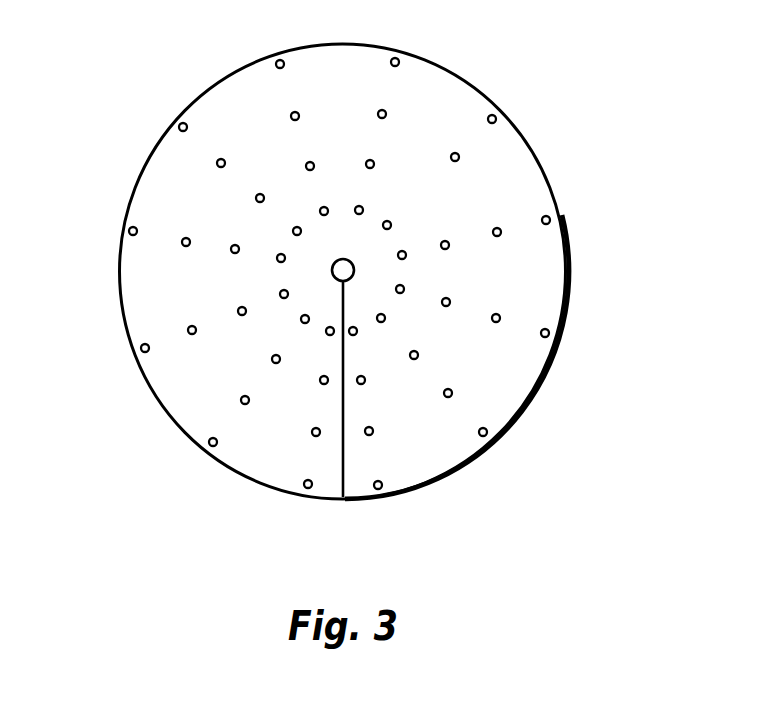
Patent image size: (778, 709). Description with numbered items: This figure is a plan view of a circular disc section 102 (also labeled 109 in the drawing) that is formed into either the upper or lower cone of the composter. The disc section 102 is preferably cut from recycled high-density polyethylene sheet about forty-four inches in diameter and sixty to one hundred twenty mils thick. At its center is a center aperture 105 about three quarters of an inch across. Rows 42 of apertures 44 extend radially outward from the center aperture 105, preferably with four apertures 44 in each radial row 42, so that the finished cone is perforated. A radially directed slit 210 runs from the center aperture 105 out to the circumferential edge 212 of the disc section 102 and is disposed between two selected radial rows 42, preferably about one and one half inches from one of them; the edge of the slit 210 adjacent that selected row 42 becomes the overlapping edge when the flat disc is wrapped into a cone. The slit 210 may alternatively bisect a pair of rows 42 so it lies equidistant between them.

The circular disc section 102 is at (307, 271).
The first plate 109 is at (147, 163).
The apertures 44 is at (186, 246).
The center aperture 105 is at (351, 256).
The slit 210 is at (346, 448).
The circumferential edge 212 is at (455, 472).
The radial rows 42 is at (302, 497).